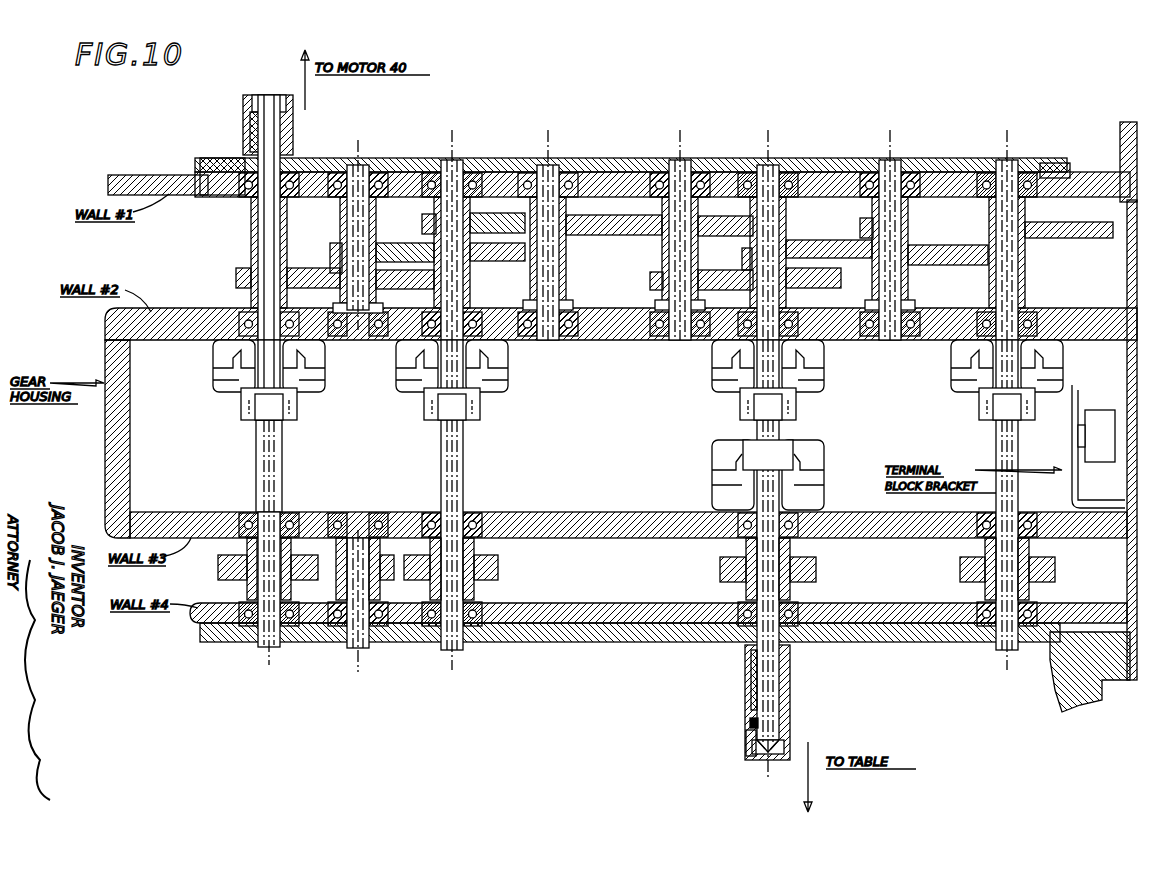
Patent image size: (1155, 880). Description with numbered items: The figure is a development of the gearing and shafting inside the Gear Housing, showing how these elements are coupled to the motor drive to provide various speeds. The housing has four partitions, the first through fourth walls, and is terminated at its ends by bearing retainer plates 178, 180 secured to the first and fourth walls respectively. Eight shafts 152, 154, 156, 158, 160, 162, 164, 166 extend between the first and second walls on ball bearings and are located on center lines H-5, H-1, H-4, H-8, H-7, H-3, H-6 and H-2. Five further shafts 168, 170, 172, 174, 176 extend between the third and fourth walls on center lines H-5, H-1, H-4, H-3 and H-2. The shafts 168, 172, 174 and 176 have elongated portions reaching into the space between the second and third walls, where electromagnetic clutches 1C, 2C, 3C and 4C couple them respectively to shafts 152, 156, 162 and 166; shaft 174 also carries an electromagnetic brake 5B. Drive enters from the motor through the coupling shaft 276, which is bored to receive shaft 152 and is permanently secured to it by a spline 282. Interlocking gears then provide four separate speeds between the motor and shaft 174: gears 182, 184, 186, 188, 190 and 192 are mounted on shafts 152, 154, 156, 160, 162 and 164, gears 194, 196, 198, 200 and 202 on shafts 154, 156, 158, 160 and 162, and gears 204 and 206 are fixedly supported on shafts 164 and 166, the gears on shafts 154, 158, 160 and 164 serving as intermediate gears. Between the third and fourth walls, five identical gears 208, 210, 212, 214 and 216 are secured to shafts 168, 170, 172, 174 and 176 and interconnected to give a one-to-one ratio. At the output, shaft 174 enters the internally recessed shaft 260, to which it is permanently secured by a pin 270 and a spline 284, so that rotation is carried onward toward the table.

The shaft 152 is at (258, 218).
The shaft 154 is at (366, 165).
The shaft 156 is at (463, 292).
The shaft 158 is at (555, 165).
The shaft 160 is at (691, 165).
The shaft 162 is at (780, 165).
The shaft 164 is at (901, 165).
The shaft 166 is at (1000, 208).
The shaft 168 is at (258, 452).
The shaft 170 is at (355, 536).
The shaft 172 is at (463, 490).
The shaft 174 is at (735, 495).
The shaft 176 is at (995, 447).
The bearing retainer plate 178 is at (614, 160).
The bearing retainer plate 180 is at (600, 634).
The gear 182 is at (236, 277).
The gear 184 is at (333, 243).
The gear 186 is at (422, 224).
The gear 188 is at (650, 282).
The gear 190 is at (742, 255).
The gear 192 is at (860, 224).
The gear 194 is at (318, 268).
The gear 196 is at (486, 255).
The gear 198 is at (574, 235).
The gear 200 is at (728, 214).
The gear 202 is at (812, 288).
The gear 204 is at (943, 265).
The gear 206 is at (1074, 238).
The gear 208 is at (218, 572).
The gear 210 is at (402, 535).
The gear 212 is at (498, 572).
The gear 214 is at (720, 572).
The gear 216 is at (960, 576).
The shaft 260 is at (745, 752).
The pin 270 is at (745, 727).
The coupling shaft 276 is at (243, 106).
The spline 282 is at (250, 130).
The spline 284 is at (745, 693).
The electromagnetic clutch 1C is at (360, 385).
The electromagnetic clutch 2C is at (553, 392).
The electromagnetic clutch 3C is at (868, 382).
The electromagnetic clutch 4C is at (1103, 377).
The electromagnetic brake 5B is at (862, 496).
The center line H-1 is at (359, 148).
The center line H-2 is at (1007, 160).
The center line H-3 is at (768, 145).
The center line H-4 is at (452, 148).
The center line H-5 is at (268, 93).
The center line H-6 is at (890, 142).
The center line H-7 is at (680, 130).
The center line H-8 is at (548, 141).